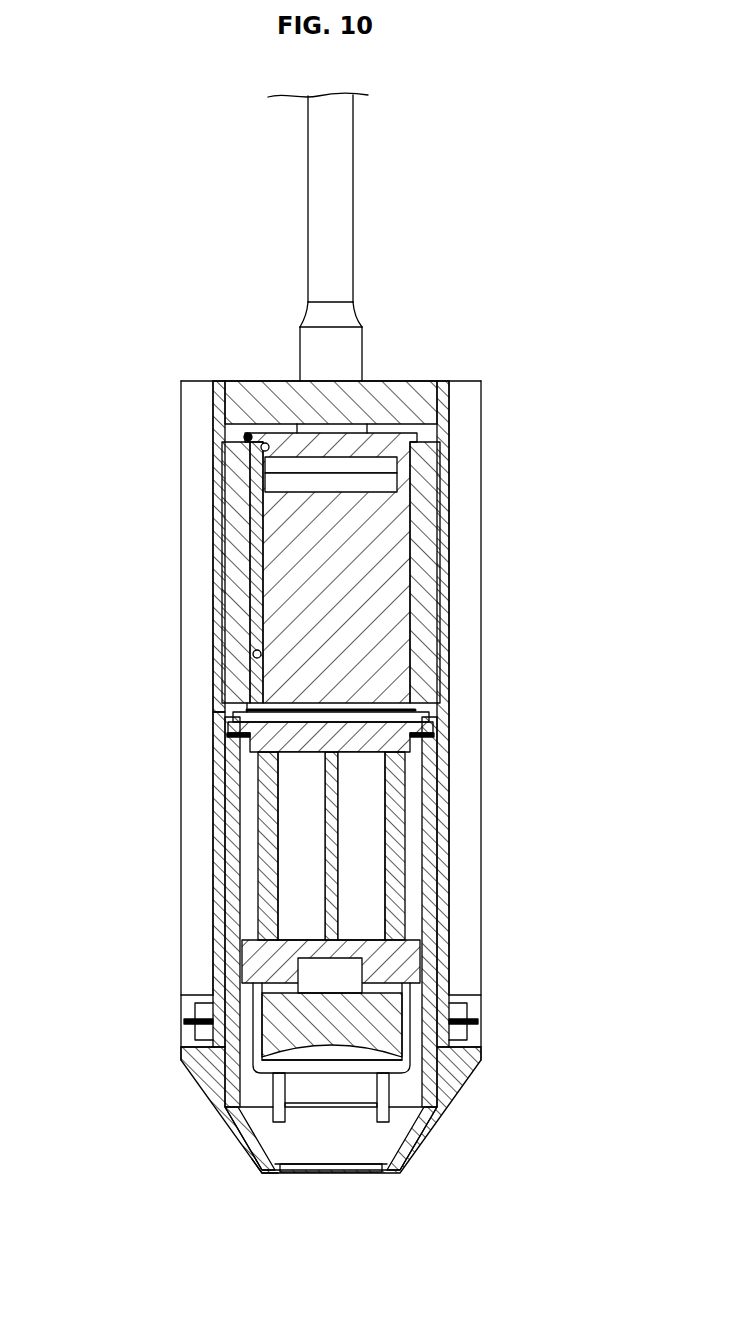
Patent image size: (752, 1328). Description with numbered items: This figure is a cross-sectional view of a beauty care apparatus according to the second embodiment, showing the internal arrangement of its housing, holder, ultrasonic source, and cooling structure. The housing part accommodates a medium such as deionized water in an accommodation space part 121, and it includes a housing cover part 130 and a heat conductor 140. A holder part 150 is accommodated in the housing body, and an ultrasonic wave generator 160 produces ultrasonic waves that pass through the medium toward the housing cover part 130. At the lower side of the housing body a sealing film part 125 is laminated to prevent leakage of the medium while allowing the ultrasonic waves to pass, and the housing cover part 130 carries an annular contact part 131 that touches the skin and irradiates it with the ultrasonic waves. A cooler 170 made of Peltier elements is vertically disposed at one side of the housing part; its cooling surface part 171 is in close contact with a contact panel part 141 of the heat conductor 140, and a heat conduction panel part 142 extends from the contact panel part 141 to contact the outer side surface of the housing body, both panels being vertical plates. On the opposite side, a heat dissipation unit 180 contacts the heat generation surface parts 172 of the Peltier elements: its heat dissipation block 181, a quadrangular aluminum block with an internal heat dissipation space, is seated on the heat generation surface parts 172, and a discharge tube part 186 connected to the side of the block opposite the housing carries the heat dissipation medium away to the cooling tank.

The discharge tube part 186 is at (333, 176).
The heat dissipation unit 180 is at (421, 376).
The heat dissipation block 181 is at (365, 530).
The cooler 170 is at (226, 568).
The cooling surface part 171 is at (218, 610).
The heat generation surface part 172 is at (255, 657).
The contact panel part 141 is at (218, 517).
The heat conduction panel part 142 is at (218, 922).
The heat conductor 140 is at (176, 745).
The holder part 150 is at (244, 823).
The accommodation space part 121 is at (250, 898).
The ultrasonic wave generator 160 is at (290, 1028).
The housing cover part 130 is at (198, 1122).
The contact part 131 is at (262, 1173).
The sealing film part 125 is at (322, 1172).